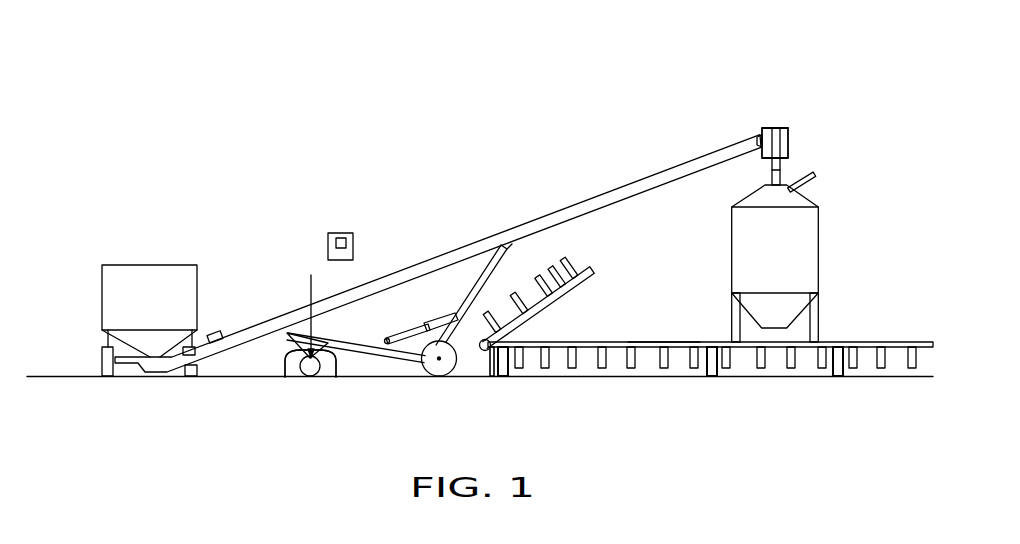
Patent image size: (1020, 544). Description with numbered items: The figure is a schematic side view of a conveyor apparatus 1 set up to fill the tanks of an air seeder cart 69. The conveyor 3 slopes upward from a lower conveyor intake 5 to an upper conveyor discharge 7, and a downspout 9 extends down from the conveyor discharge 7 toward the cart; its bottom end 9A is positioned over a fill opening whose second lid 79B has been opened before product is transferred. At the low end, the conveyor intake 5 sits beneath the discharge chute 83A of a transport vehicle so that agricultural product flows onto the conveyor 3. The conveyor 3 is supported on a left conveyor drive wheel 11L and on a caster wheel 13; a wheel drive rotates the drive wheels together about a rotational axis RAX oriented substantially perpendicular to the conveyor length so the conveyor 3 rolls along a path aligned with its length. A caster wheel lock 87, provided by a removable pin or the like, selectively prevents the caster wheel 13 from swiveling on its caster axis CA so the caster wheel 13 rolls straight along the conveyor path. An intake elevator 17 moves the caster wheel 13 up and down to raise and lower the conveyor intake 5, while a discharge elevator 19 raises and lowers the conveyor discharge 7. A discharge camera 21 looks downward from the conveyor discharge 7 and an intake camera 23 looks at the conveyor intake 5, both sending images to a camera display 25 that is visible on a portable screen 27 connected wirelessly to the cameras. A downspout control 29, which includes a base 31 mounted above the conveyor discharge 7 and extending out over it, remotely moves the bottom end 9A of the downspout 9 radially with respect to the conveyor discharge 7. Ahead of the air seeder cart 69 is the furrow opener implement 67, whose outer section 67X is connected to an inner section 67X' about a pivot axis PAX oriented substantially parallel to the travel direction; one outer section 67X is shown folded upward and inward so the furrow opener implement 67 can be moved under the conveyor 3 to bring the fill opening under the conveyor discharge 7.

The conveyor apparatus 1 is at (547, 104).
The conveyor 3 is at (533, 221).
The conveyor intake 5 is at (156, 376).
The conveyor discharge 7 is at (782, 112).
The downspout 9 is at (771, 179).
The bottom end of downspout 9A is at (781, 168).
The left conveyor drive wheel 11L is at (424, 376).
The caster wheel 13 is at (296, 378).
The intake elevator 17 is at (338, 378).
The discharge elevator 19 is at (427, 326).
The discharge camera 21 is at (757, 138).
The intake camera 23 is at (213, 330).
The camera display 25 is at (353, 240).
The portable screen 27 is at (329, 236).
The downspout control 29 is at (789, 146).
The base 31 is at (774, 128).
The furrow opener implement 67 is at (861, 342).
The outer section 67X is at (580, 292).
The inner section 67X' is at (675, 325).
The air seeder cart 69 is at (819, 257).
The second lid 79B is at (807, 181).
The discharge chute 83A is at (149, 355).
The caster wheel lock 87 is at (286, 354).
The caster axis CA is at (311, 275).
The pivot axis PAX is at (510, 343).
The rotational axis RAX is at (442, 361).